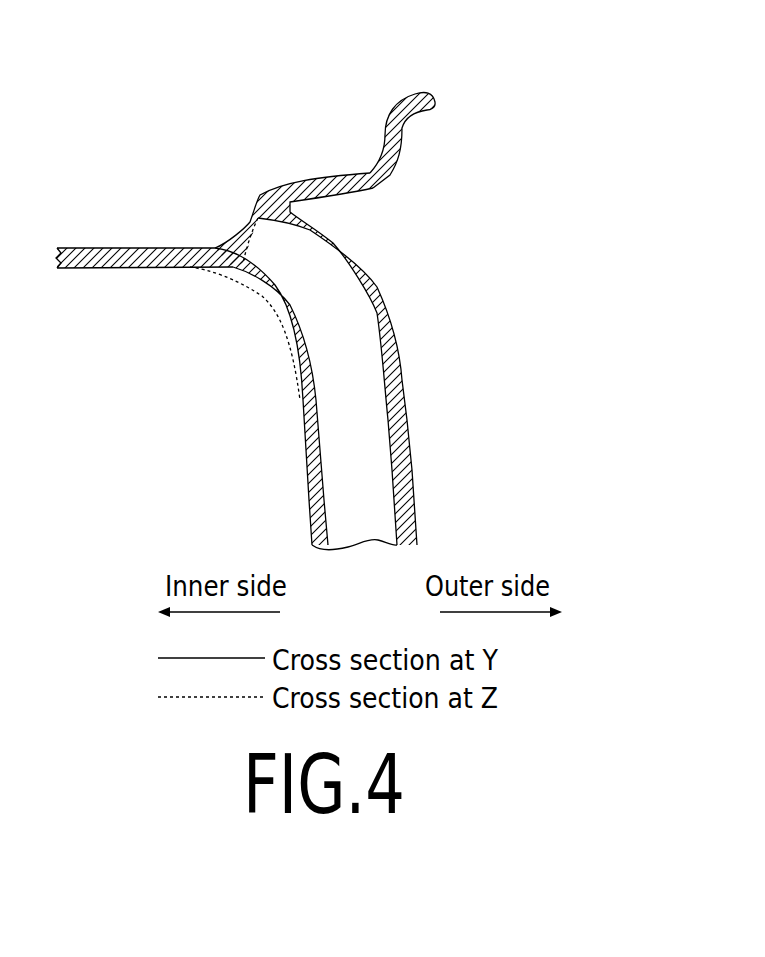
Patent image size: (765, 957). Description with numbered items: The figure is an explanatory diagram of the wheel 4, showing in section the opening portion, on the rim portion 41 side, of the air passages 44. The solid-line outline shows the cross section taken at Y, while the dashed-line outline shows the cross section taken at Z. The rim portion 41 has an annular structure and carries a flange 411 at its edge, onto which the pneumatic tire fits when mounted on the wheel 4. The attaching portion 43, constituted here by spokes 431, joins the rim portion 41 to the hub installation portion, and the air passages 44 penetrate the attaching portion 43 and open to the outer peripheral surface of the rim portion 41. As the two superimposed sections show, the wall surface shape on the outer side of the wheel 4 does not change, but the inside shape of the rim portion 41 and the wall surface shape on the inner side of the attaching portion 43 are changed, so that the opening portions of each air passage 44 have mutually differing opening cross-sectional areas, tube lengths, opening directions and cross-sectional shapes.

The wheel 4 is at (386, 72).
The rim portion 41 is at (143, 249).
The flange 411 is at (421, 93).
The attaching portion 43 is at (389, 279).
The spoke 431 is at (393, 307).
The air passage 44 is at (370, 383).